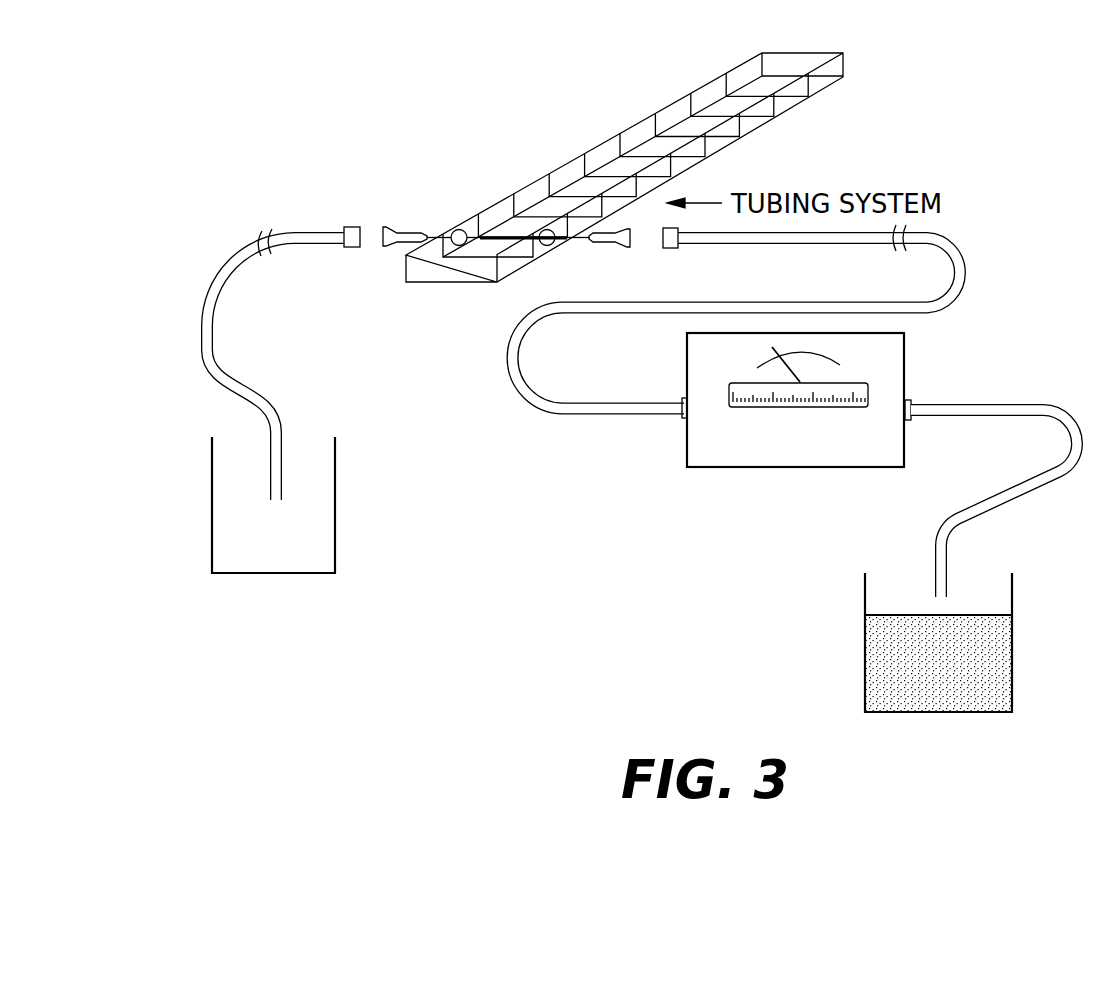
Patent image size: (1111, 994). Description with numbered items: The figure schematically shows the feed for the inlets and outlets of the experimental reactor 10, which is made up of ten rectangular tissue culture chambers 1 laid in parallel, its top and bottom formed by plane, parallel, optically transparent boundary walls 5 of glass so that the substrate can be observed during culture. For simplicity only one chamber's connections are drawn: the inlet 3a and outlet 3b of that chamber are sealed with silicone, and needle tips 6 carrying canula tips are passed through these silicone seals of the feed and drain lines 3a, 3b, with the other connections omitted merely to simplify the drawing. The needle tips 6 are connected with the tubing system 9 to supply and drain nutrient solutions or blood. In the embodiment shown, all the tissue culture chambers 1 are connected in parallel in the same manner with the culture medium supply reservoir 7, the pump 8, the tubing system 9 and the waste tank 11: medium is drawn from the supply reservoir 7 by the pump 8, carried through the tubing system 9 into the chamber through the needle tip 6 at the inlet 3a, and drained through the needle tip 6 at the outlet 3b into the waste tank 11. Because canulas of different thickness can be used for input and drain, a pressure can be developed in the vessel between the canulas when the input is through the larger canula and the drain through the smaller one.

The tissue culture chambers 1 is at (465, 217).
The inlet 3a is at (547, 246).
The outlet 3b is at (458, 228).
The boundary walls 5 is at (207, 296).
The needle tips 6 is at (392, 246).
The culture medium supply reservoir 7 is at (1013, 667).
The pump 8 is at (779, 467).
The tubing system 9 is at (957, 248).
The experimental reactor 10 is at (840, 103).
The waste tank 11 is at (225, 523).